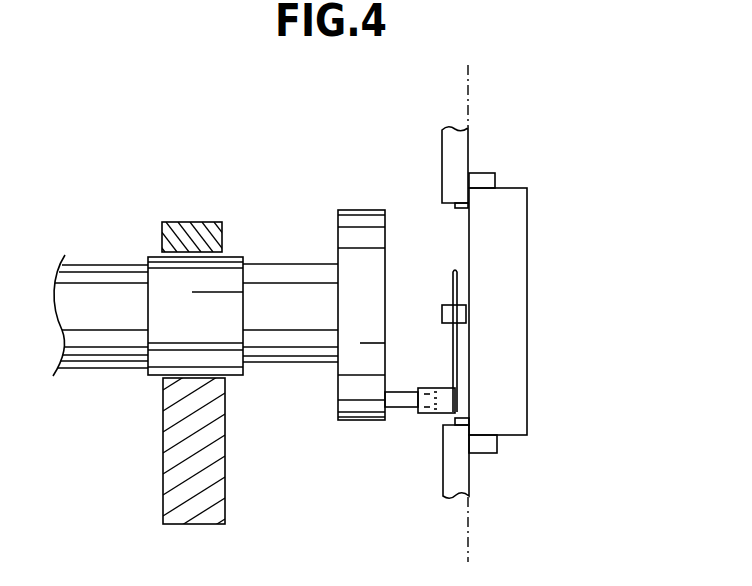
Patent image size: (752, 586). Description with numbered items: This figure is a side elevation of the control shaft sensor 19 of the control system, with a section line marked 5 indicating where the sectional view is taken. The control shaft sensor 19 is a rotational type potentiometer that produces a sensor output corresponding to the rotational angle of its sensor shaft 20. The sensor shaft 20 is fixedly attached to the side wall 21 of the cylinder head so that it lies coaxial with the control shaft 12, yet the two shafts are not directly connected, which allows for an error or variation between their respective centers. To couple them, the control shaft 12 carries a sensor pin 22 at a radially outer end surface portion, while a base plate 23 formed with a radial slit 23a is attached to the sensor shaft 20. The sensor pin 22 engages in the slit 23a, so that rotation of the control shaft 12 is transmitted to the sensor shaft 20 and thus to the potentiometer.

The control shaft 12 is at (103, 303).
The control shaft sensor 19 is at (562, 268).
The sensor shaft 20 is at (458, 314).
The side wall 21 is at (456, 498).
The sensor pin 22 is at (403, 404).
The base plate 23 is at (456, 369).
The radial slit 23a is at (442, 414).
The section line 5- 5 is at (480, 82).